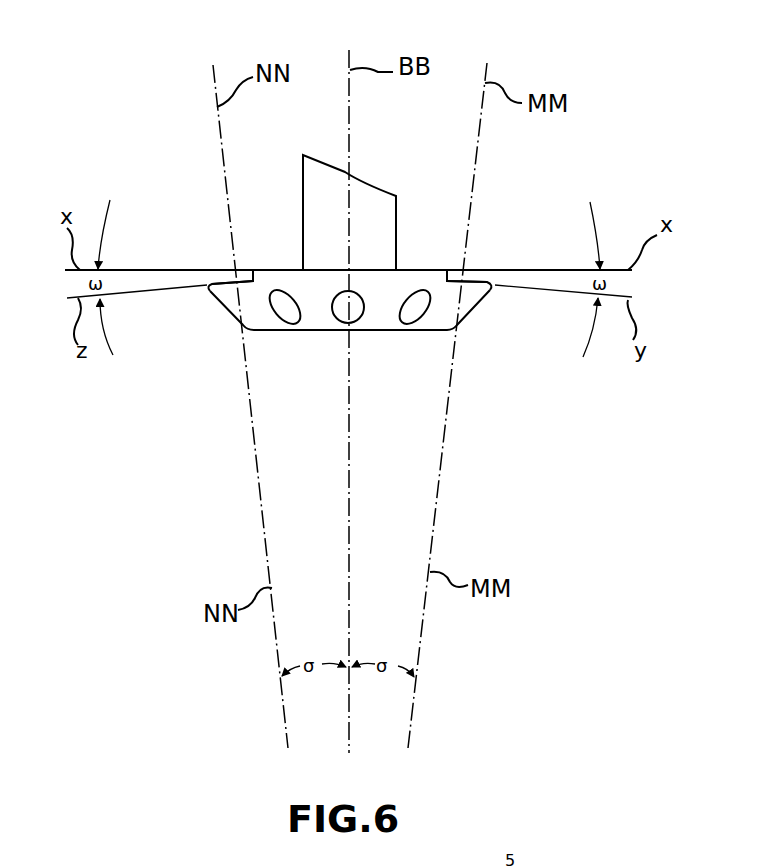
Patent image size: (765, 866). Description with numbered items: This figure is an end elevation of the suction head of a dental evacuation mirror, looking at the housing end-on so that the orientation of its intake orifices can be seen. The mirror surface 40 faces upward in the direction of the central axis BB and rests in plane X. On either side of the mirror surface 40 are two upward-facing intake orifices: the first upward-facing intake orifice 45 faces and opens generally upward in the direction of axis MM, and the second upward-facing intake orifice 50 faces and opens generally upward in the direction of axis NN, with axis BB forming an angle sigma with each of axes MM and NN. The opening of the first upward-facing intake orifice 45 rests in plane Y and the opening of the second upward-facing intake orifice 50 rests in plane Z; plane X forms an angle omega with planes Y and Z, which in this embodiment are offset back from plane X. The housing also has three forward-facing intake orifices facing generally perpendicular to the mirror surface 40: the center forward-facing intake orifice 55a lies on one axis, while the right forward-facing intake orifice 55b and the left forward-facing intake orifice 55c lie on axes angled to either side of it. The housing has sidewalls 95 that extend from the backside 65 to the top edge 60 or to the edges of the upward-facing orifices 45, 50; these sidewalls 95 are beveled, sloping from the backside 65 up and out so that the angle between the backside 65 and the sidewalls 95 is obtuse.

The mirror surface 40 is at (272, 270).
The first upward-facing intake orifice 45 is at (478, 274).
The second upward-facing intake orifice 50 is at (222, 276).
The center forward-facing intake orifice 55a is at (362, 322).
The right forward-facing intake orifice 55b is at (420, 322).
The left forward-facing intake orifice 55c is at (283, 325).
The top edge 60 is at (243, 282).
The backside 65 is at (320, 331).
The sidewalls 95 is at (226, 293).